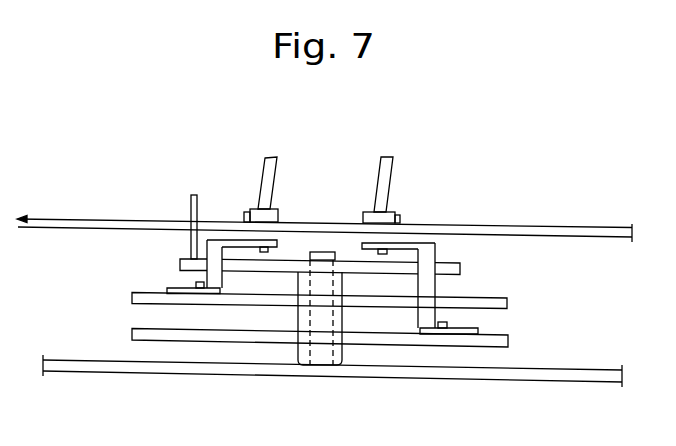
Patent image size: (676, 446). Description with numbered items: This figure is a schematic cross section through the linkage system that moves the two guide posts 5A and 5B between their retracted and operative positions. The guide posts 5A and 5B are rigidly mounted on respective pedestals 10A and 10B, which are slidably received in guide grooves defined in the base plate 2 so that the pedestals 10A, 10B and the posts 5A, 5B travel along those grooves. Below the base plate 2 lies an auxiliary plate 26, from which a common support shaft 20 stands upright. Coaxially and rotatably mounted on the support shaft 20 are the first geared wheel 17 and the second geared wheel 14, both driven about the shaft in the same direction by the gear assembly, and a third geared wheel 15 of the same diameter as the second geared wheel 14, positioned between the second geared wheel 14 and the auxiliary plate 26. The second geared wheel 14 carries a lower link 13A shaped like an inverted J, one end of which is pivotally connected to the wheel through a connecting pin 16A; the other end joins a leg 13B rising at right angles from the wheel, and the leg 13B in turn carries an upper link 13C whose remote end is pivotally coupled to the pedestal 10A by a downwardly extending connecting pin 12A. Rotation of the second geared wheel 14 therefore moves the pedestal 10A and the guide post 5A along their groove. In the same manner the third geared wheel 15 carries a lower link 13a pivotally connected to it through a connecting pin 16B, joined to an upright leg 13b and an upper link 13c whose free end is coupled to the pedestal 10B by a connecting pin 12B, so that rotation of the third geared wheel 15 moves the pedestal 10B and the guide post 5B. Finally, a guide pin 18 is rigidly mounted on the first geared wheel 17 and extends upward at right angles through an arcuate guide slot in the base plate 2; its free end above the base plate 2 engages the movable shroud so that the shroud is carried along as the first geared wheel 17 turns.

The base plate 2 is at (546, 227).
The guide post 5A is at (268, 157).
The guide post 5B is at (391, 157).
The pedestal 10A is at (247, 210).
The pedestal 10B is at (398, 212).
The connecting pin 12A is at (252, 239).
The connecting pin 12B is at (392, 242).
The lower link 13A is at (176, 287).
The leg 13B is at (180, 260).
The upper link 13C is at (222, 240).
The lower link 13a is at (478, 328).
The leg 13b is at (430, 257).
The upper link 13c is at (413, 244).
The second geared wheel 14 is at (508, 303).
The third geared wheel 15 is at (509, 341).
The connecting pin 16A is at (190, 303).
The connecting pin 16B is at (457, 330).
The first geared wheel 17 is at (461, 268).
The guide pin 18 is at (190, 199).
The support shaft 20 is at (320, 250).
The auxiliary plate 26 is at (175, 372).